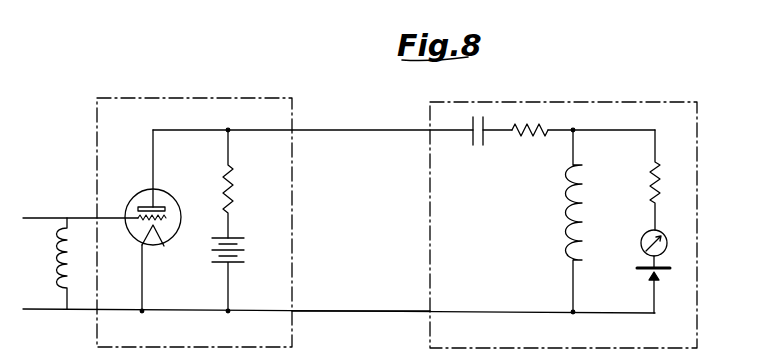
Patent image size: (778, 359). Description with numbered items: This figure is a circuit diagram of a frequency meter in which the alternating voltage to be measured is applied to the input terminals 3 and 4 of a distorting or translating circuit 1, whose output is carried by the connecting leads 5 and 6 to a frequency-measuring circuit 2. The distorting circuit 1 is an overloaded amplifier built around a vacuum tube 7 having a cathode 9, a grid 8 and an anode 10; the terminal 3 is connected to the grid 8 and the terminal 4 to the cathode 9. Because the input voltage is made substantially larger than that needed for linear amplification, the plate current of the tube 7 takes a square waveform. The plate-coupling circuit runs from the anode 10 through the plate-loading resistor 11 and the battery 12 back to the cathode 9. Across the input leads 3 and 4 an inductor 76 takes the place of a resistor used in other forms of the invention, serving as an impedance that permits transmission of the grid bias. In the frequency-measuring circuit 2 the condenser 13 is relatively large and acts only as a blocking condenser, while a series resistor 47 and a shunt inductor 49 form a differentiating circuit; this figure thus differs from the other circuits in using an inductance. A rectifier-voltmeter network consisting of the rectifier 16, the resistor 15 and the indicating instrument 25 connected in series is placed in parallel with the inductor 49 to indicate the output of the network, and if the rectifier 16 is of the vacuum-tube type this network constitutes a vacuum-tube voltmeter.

The distorting or translating circuit 1 is at (181, 98).
The frequency-measuring circuit 2 is at (577, 102).
The input terminal 3 is at (38, 218).
The input terminal 4 is at (37, 309).
The connecting lead 5 is at (330, 130).
The connecting lead 6 is at (335, 315).
The vacuum tube 7 is at (133, 205).
The grid 8 is at (166, 220).
The cathode 9 is at (160, 236).
The anode 10 is at (157, 207).
The resistor 11 is at (236, 189).
The battery 12 is at (244, 257).
The condenser 13 is at (480, 147).
The resistor 15 is at (648, 187).
The rectifier 16 is at (648, 277).
The indicating instrument 25 is at (641, 243).
The series resistor 47 is at (526, 139).
The shunt inductor 49 is at (567, 219).
The inductor 76 is at (59, 253).